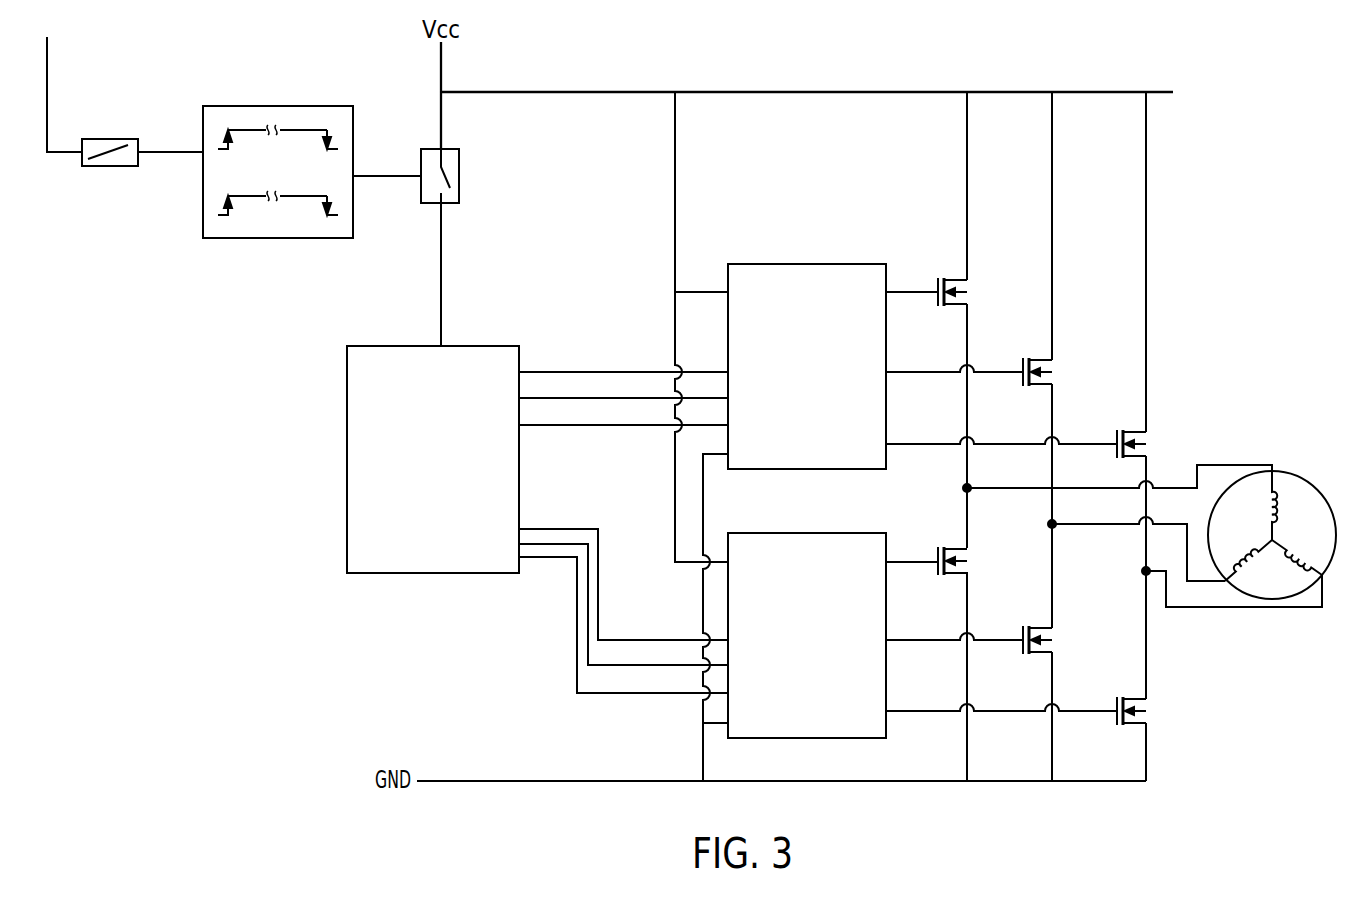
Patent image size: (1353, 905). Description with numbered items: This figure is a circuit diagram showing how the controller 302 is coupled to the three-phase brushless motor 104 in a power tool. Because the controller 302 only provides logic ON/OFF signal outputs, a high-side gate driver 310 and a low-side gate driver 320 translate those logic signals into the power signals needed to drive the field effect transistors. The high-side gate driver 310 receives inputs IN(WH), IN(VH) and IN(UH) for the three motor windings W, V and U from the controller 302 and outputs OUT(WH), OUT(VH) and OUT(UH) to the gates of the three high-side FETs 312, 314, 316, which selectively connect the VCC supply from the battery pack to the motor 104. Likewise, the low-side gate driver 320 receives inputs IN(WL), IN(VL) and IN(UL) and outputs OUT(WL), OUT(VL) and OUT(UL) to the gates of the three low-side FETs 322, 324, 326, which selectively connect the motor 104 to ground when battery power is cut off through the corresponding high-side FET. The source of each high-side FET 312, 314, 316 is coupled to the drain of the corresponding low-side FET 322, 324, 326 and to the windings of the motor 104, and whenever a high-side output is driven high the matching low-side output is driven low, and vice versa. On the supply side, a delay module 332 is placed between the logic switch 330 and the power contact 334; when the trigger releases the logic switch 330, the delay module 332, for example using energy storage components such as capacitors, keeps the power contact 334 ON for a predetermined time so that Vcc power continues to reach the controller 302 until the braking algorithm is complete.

The motor 104 is at (1298, 473).
The controller 302 is at (492, 346).
The high-side gate driver 310 is at (821, 339).
The high-side FET 312 is at (971, 286).
The high-side FET 314 is at (1056, 366).
The high-side FET 316 is at (1150, 438).
The low-side gate driver 320 is at (821, 609).
The low-side FET 322 is at (971, 555).
The low-side FET 324 is at (1056, 636).
The low-side FET 326 is at (1150, 706).
The logic switch 330 is at (108, 139).
The delay module 332 is at (283, 106).
The power contact 334 is at (462, 166).